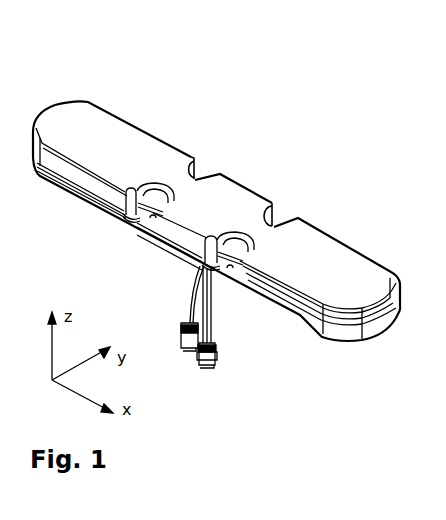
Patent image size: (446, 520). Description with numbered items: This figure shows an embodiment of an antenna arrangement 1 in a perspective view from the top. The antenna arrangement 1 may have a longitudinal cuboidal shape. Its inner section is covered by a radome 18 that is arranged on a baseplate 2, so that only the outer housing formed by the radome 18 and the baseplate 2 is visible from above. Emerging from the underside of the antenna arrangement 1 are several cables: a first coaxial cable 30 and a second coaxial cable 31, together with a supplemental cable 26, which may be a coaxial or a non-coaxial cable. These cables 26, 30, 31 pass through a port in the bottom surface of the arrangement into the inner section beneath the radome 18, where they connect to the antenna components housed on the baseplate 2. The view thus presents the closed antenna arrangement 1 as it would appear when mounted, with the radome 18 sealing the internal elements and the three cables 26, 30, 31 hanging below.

The antenna arrangement 1 is at (86, 66).
The radome 18 is at (117, 145).
The baseplate 2 is at (203, 268).
The supplemental cable 26 is at (184, 322).
The first coaxial cable 30 is at (212, 302).
The second coaxial cable 31 is at (187, 288).